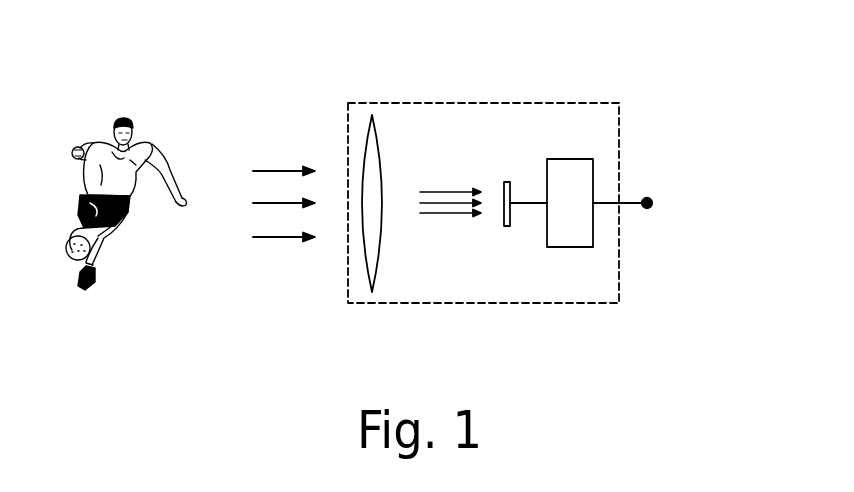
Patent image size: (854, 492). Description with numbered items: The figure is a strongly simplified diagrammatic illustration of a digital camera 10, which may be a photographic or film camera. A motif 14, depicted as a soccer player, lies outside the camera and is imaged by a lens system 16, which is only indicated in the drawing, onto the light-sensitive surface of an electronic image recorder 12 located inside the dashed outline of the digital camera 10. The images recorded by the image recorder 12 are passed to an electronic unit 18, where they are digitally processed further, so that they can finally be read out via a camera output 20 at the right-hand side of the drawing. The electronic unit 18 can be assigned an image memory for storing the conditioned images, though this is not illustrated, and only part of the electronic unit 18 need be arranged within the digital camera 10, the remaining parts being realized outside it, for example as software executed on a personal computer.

The digital camera 10 is at (477, 102).
The electronic image recorder 12 is at (508, 182).
The motif 14 is at (148, 140).
The lens system 16 is at (368, 152).
The electronic unit 18 is at (565, 241).
The camera output 20 is at (650, 207).